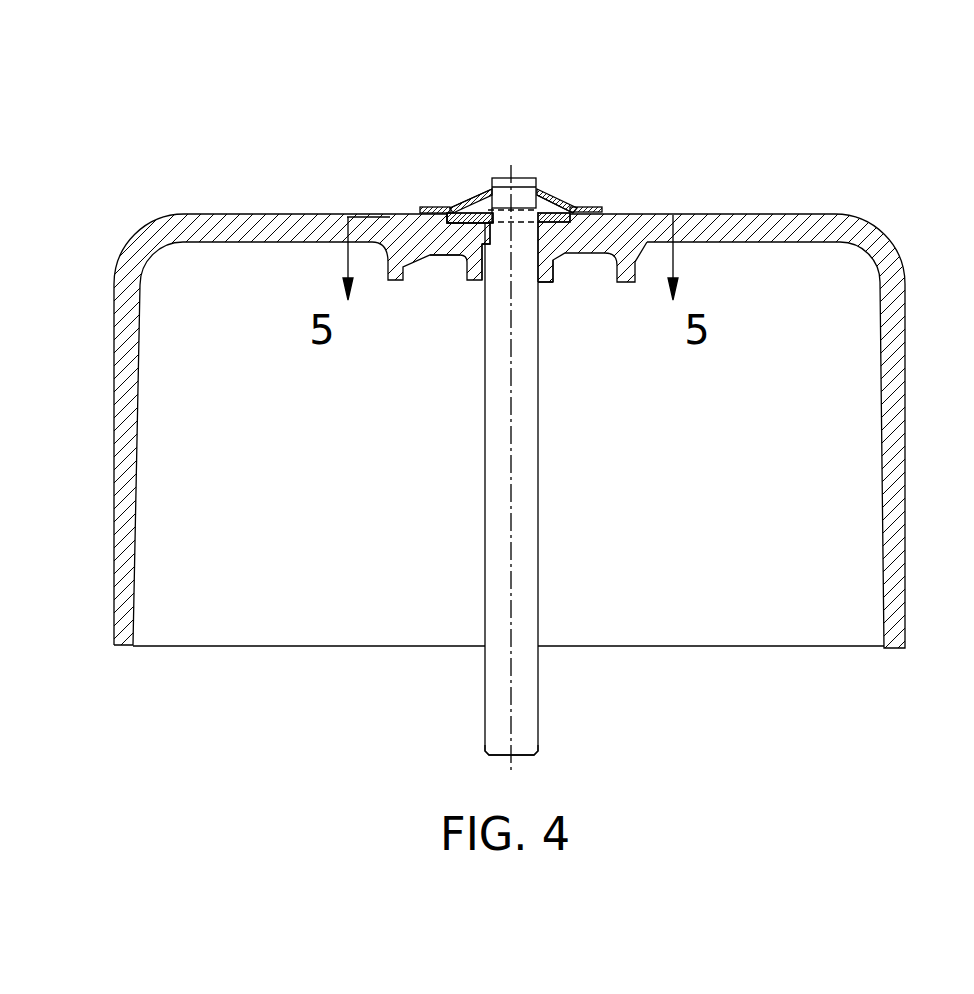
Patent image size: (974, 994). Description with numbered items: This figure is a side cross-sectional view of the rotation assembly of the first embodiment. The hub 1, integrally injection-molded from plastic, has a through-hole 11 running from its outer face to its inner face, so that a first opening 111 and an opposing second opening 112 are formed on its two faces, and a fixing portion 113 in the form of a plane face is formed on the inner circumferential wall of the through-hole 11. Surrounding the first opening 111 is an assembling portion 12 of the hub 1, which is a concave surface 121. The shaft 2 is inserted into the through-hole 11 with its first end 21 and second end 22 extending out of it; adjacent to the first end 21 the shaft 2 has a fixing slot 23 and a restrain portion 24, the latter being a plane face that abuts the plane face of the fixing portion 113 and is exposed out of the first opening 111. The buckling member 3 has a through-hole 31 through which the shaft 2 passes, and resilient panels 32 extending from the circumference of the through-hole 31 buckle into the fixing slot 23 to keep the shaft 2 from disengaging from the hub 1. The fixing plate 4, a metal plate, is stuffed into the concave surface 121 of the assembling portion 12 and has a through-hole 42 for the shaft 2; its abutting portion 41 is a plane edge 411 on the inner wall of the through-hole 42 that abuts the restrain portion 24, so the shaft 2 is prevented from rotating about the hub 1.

The hub 1 is at (790, 214).
The through-hole 11 is at (523, 265).
The first opening 111 is at (574, 212).
The second opening 112 is at (523, 245).
The fixing portion 113 is at (498, 228).
The assembling portion 12 is at (575, 216).
The concave surface 121 is at (567, 222).
The shaft 2 is at (532, 660).
The first end 21 is at (530, 166).
The second end 22 is at (549, 766).
The fixing slot 23 is at (522, 195).
The restrain portion 24 is at (472, 246).
The buckling member 3 is at (588, 206).
The through-hole 31 is at (488, 192).
The resilient panels 32 is at (436, 207).
The fixing plate 4 is at (445, 208).
The abutting portion 41 is at (466, 212).
The plane edge 411 is at (505, 205).
The through-hole 42 is at (530, 212).